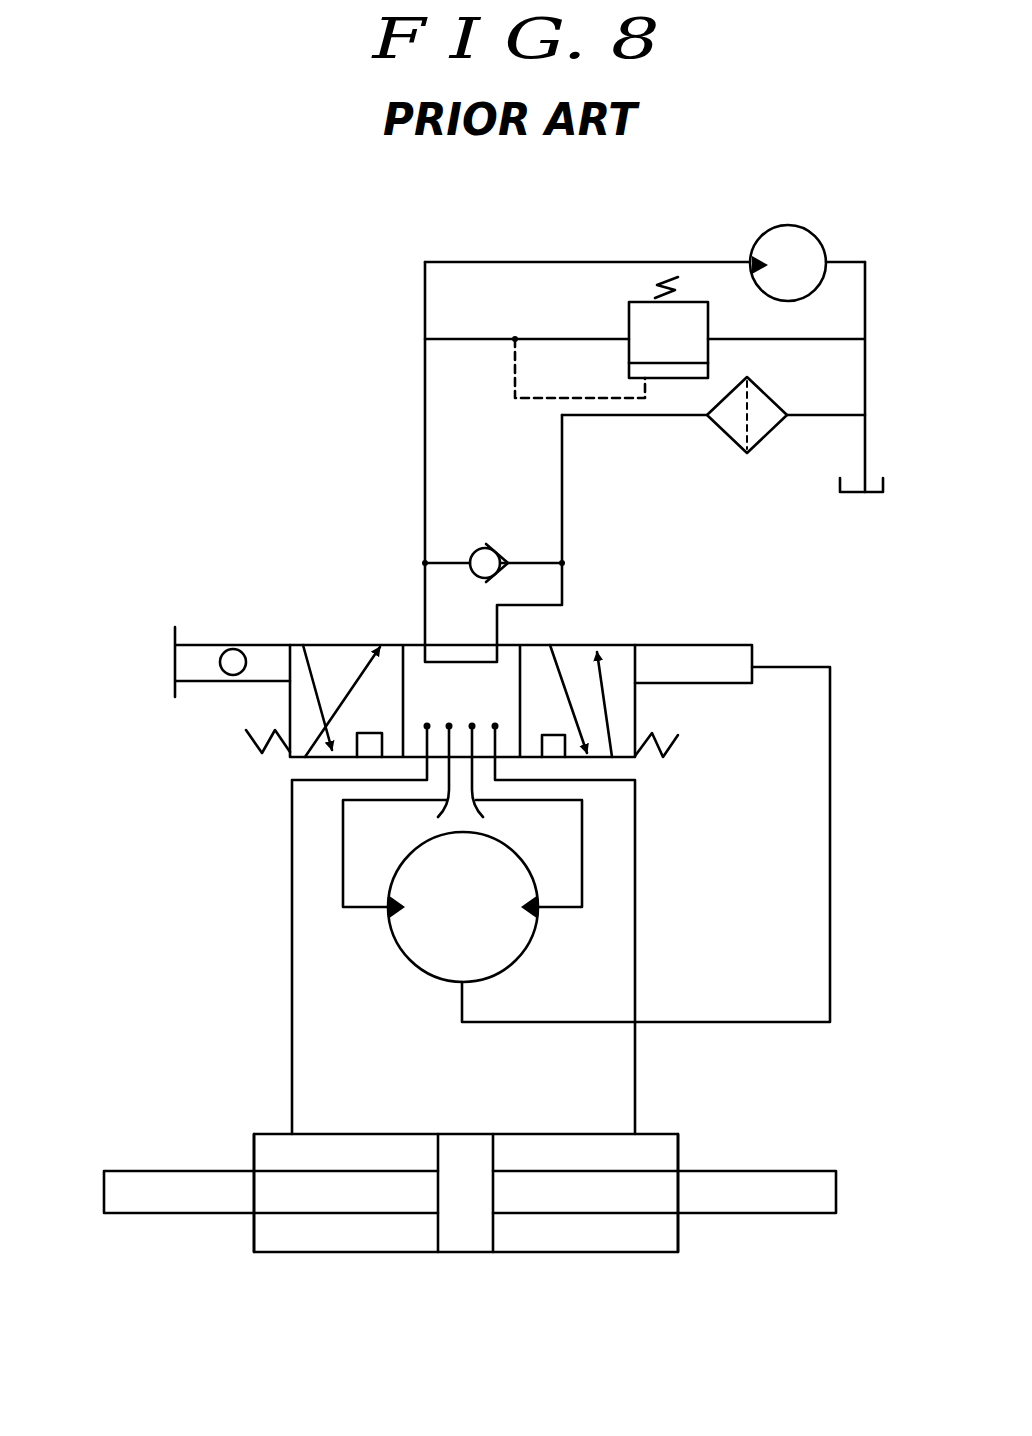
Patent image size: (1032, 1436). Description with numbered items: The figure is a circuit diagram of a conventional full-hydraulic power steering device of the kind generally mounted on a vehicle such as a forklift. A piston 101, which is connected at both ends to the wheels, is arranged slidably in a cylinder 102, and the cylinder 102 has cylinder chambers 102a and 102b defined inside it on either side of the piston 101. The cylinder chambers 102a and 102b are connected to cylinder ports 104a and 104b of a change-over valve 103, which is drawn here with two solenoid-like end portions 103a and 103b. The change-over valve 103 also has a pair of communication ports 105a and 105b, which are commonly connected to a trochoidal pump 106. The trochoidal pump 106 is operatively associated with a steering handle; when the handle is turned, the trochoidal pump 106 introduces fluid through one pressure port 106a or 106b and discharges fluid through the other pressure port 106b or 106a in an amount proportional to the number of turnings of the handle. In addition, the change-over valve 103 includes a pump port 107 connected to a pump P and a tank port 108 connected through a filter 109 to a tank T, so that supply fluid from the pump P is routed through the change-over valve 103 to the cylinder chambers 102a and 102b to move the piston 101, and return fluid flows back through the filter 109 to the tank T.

The pump P is at (810, 225).
The tank T is at (865, 497).
The piston 101 is at (463, 1229).
The cylinder 102 is at (606, 1254).
The cylinder chamber 102a is at (540, 1236).
The cylinder chamber 102b is at (348, 1238).
The change-over valve 103 is at (350, 600).
The solenoid 103a is at (623, 645).
The solenoid 103b is at (295, 643).
The cylinder port 104a is at (495, 762).
The cylinder port 104b is at (427, 760).
The communication port 105a is at (527, 816).
The communication port 105b is at (396, 816).
The trochoidal pump 106 is at (445, 983).
The pressure port 106a is at (545, 910).
The pressure port 106b is at (390, 910).
The pump port 107 is at (425, 640).
The tank port 108 is at (503, 643).
The filter 109 is at (725, 438).